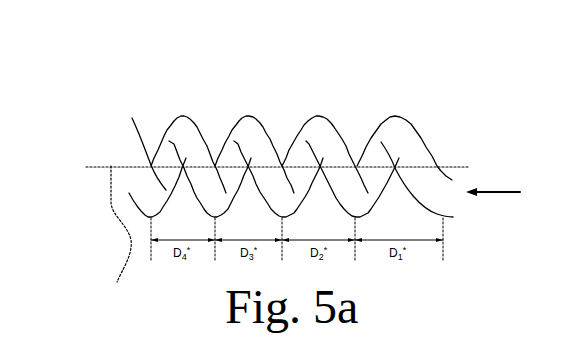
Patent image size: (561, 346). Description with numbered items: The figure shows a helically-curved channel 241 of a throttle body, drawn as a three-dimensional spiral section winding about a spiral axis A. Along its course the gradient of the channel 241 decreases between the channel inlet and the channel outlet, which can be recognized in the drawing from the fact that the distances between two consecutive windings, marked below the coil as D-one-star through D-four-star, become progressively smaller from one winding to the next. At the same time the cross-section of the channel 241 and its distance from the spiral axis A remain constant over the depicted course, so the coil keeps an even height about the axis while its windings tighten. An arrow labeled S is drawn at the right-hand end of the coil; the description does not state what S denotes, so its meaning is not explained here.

The channel 241 is at (291, 108).
The spiral axis A is at (111, 239).
The direction S is at (495, 194).